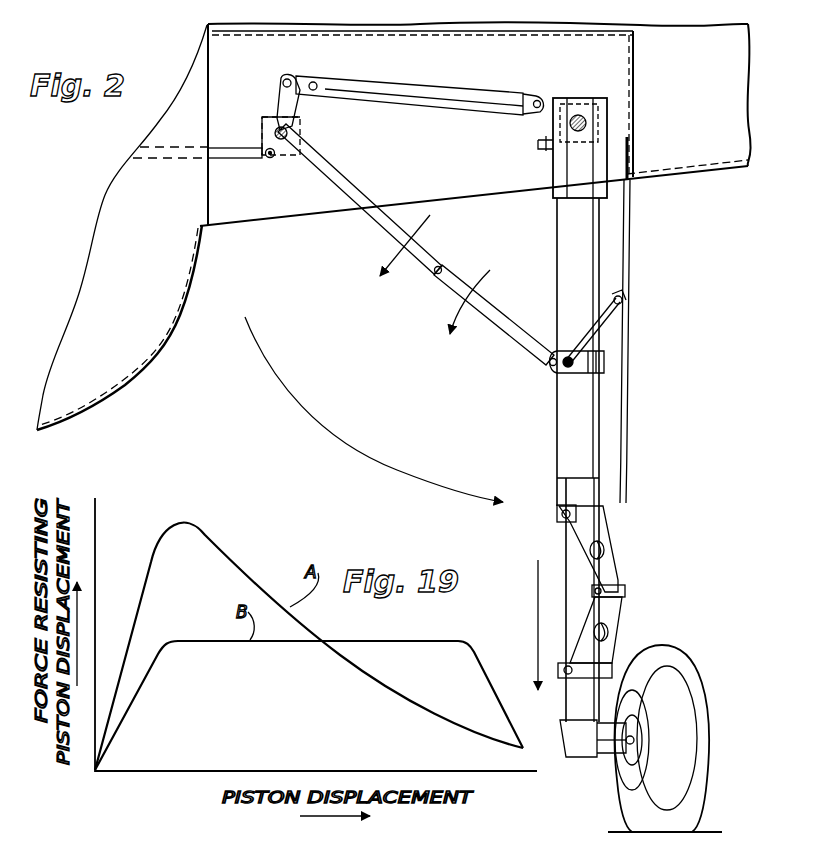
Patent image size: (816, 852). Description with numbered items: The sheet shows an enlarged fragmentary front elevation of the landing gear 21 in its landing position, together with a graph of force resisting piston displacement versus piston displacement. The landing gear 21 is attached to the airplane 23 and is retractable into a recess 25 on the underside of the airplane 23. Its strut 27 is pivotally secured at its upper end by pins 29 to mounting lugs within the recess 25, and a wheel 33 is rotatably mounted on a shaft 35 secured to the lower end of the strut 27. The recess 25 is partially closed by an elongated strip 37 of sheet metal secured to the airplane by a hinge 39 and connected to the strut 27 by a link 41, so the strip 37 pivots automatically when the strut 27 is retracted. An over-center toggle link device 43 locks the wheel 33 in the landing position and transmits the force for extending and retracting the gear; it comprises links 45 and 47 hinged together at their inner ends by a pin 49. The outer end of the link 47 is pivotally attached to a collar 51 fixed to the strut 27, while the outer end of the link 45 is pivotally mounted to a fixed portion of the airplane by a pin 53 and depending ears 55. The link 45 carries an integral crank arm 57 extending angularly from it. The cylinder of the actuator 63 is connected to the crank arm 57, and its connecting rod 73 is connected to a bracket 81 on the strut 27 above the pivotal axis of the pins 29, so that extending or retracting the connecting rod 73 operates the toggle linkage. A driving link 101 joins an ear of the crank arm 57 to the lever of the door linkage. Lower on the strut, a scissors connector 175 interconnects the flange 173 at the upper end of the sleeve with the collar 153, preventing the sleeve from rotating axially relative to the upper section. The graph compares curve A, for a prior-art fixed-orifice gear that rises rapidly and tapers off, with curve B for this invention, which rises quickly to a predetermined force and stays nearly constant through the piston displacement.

The landing gear 21 is at (544, 512).
The airplane 23 is at (661, 24).
The recess 25 is at (150, 255).
The strut 27 is at (556, 432).
The pins 29 is at (587, 124).
The wheel 33 is at (671, 656).
The shaft 35 is at (614, 758).
The elongated strip 37 is at (624, 392).
The hinge 39 is at (630, 180).
The link 41 is at (592, 336).
The over-center toggle link device 43 is at (433, 274).
The link 45 is at (396, 236).
The link 47 is at (524, 339).
The pin 49 is at (443, 268).
The collar 51 is at (585, 365).
The pin 53 is at (264, 150).
The depending ears 55 is at (268, 118).
The crank arm 57 is at (283, 98).
The actuator 63 is at (403, 98).
The connecting rod 73 is at (534, 96).
The bracket 81 is at (547, 110).
The driving link 101 is at (216, 157).
The collar 153 is at (558, 502).
The flange 173 is at (559, 678).
The scissors connector 175 is at (614, 577).